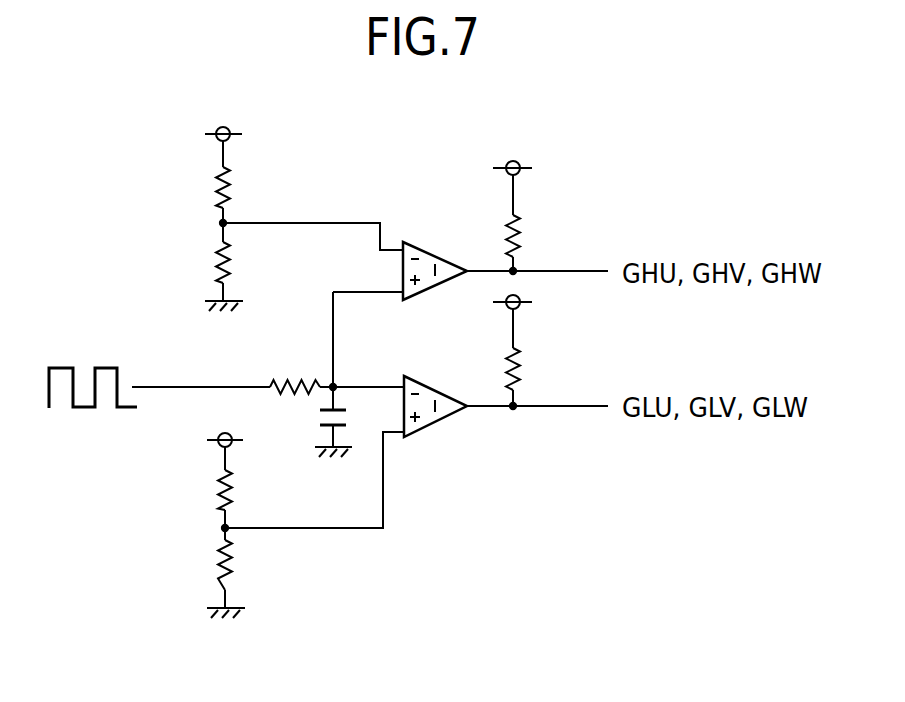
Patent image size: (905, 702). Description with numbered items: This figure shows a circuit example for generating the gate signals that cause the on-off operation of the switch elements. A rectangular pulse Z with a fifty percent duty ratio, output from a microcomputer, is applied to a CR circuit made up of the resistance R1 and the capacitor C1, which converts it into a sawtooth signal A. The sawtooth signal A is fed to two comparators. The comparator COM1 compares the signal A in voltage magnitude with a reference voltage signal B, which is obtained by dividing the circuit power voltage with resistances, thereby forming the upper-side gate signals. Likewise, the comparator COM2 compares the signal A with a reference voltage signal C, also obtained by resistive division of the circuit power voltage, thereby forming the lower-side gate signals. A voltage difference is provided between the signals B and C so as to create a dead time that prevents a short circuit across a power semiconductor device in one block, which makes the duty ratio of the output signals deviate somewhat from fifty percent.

The rectangular pulse Z is at (58, 367).
The resistance of the CR circuit R1 is at (272, 384).
The sawtooth signal A is at (331, 385).
The capacitor of the CR circuit C1 is at (318, 418).
The reference voltage signal B is at (229, 221).
The reference voltage signal C is at (229, 530).
The comparator COM1 is at (440, 248).
The comparator COM2 is at (440, 384).